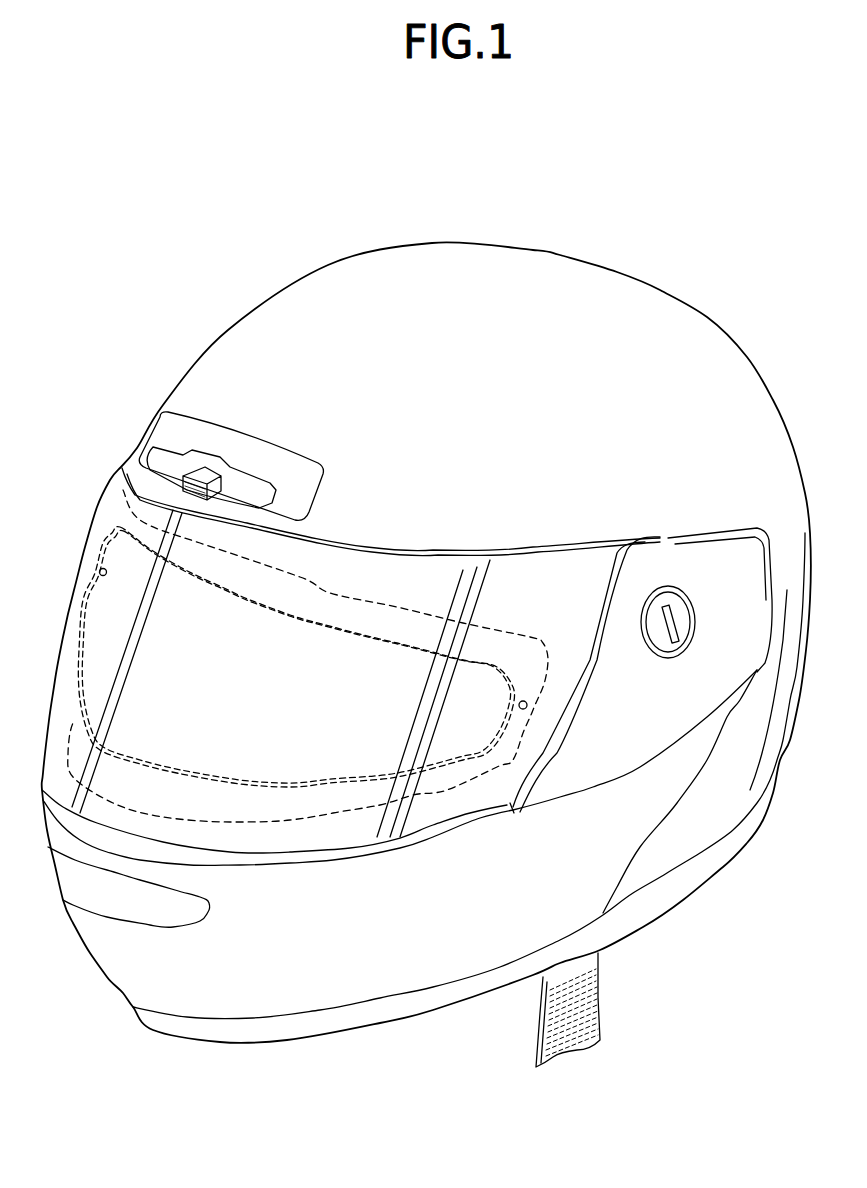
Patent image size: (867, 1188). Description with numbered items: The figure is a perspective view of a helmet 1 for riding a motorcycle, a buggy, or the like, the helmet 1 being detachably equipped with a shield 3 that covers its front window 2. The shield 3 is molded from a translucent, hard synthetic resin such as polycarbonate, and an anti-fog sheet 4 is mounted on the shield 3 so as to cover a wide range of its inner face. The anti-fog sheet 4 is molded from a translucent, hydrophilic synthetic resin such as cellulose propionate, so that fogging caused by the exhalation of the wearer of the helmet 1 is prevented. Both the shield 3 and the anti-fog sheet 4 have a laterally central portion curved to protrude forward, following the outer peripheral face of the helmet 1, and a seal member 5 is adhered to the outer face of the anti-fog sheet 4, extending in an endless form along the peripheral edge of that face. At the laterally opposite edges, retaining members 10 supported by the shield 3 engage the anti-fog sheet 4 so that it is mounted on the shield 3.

The helmet 1 is at (616, 280).
The front window 2 is at (368, 602).
The shield 3 is at (405, 557).
The anti-fog sheet 4 is at (393, 660).
The seal member 5 is at (297, 620).
The retaining member 10 is at (108, 572).